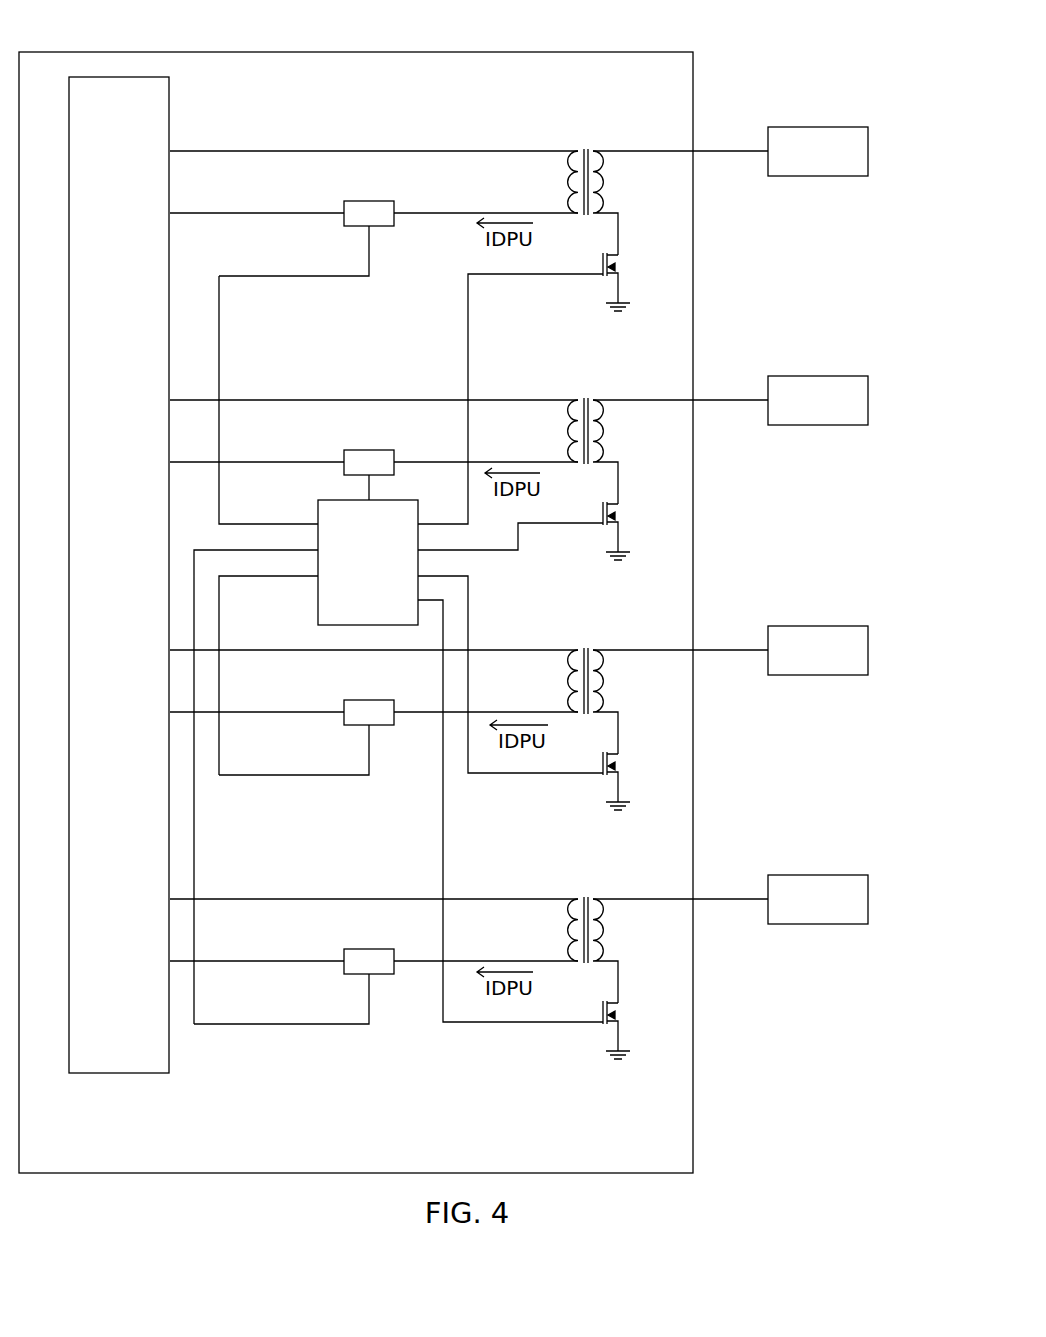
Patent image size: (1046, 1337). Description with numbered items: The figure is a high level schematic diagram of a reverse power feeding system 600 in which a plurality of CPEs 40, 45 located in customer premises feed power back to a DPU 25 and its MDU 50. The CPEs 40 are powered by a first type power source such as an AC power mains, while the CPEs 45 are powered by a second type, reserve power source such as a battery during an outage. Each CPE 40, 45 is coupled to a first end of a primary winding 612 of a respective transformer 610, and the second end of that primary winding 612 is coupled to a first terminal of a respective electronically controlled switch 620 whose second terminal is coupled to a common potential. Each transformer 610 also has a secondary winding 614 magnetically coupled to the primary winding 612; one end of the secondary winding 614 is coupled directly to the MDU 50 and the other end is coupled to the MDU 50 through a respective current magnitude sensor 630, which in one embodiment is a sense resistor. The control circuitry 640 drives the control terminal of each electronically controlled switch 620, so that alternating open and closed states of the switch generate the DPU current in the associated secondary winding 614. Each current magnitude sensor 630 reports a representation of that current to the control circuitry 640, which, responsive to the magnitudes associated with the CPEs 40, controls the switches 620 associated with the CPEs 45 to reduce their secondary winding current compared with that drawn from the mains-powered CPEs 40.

The reverse power feeding system 600 is at (775, 73).
The DPU 25 is at (218, 1173).
The MDU 50 is at (119, 1073).
The CPE 40 is at (817, 177).
The CPE 45 is at (818, 676).
The transformer 610 is at (591, 552).
The primary winding 612 is at (600, 177).
The secondary winding 614 is at (568, 176).
The electronically controlled switch 620 is at (612, 262).
The current magnitude sensor 630 is at (369, 200).
The control circuitry 640 is at (318, 600).